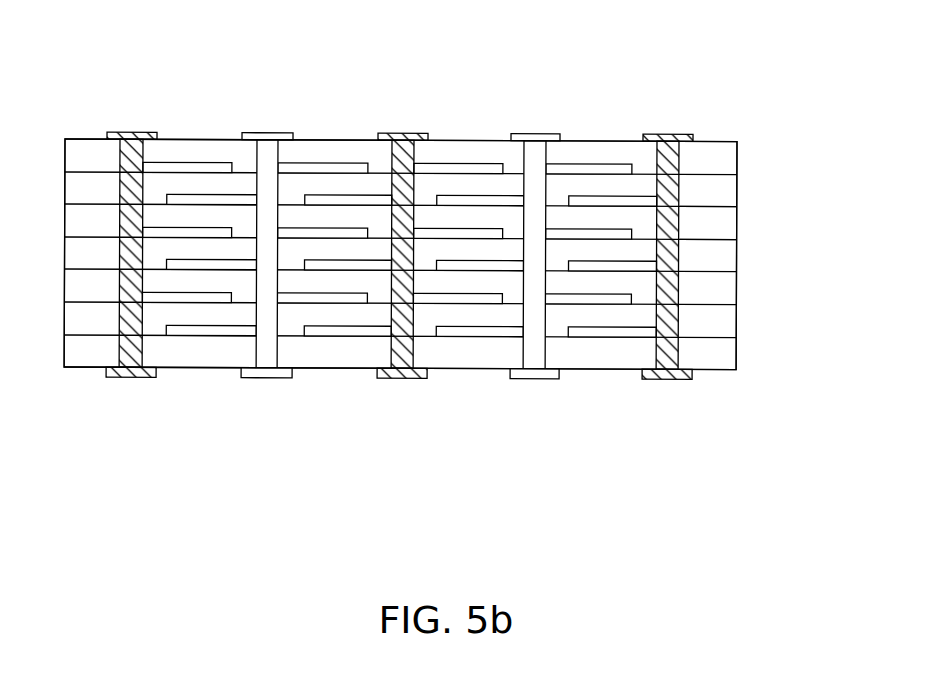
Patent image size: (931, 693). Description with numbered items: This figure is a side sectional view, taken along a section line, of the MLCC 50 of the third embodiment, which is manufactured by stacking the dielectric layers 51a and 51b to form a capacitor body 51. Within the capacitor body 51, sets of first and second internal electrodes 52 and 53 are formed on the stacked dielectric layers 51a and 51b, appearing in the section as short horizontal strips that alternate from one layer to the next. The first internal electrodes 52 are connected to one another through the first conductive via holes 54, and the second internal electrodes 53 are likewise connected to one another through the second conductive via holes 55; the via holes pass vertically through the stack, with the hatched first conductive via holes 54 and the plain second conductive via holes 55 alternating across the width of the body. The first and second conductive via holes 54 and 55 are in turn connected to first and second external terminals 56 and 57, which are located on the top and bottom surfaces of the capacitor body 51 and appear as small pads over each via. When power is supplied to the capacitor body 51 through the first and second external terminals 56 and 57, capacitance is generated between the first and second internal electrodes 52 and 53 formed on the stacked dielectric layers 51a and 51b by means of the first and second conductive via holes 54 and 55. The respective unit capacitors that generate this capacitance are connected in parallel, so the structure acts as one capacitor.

The MLCC 50 is at (705, 63).
The capacitor body 51 is at (746, 367).
The dielectric layer 51a is at (730, 194).
The dielectric layer 51b is at (728, 225).
The first internal electrode 52 is at (214, 198).
The second internal electrode 53 is at (175, 168).
The first conductive via hole 54 is at (120, 345).
The second conductive via hole 55 is at (258, 345).
The first external terminal 56 is at (130, 133).
The second external terminal 57 is at (267, 132).